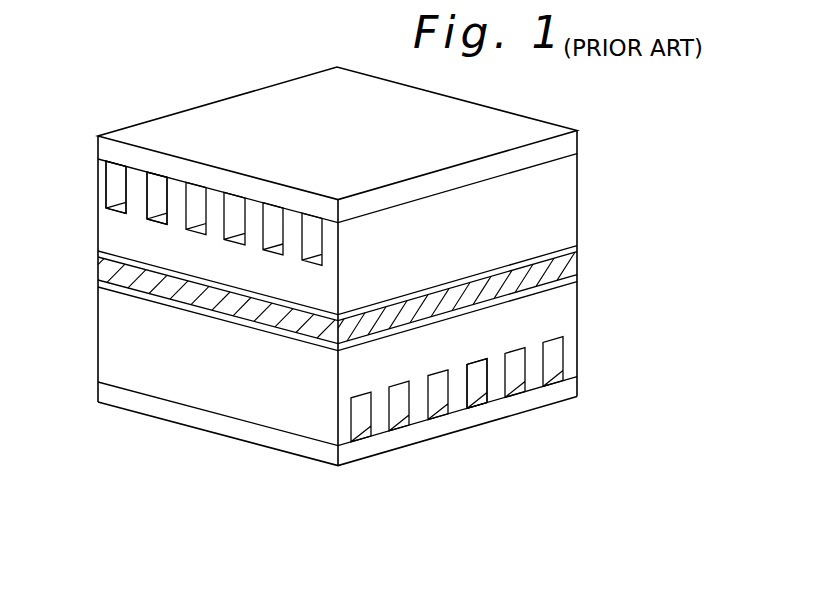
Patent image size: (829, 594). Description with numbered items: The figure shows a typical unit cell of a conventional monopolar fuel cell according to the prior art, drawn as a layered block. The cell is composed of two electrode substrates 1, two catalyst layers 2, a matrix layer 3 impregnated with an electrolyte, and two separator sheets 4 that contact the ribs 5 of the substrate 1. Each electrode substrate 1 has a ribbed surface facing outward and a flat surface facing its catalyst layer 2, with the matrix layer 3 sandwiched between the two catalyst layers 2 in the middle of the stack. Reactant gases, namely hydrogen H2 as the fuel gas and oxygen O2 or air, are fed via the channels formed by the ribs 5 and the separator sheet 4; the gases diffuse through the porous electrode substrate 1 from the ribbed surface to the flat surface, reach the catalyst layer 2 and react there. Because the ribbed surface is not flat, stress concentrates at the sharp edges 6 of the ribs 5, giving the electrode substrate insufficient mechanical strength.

The electrode substrate 1 is at (568, 201).
The catalyst layer 2 is at (575, 245).
The matrix layer 3 is at (573, 263).
The separator sheet 4 is at (572, 146).
The ribs 5 is at (176, 192).
The sharp edges 6 is at (104, 211).
The oxygen O2 is at (154, 222).
The hydrogen H2 is at (481, 408).